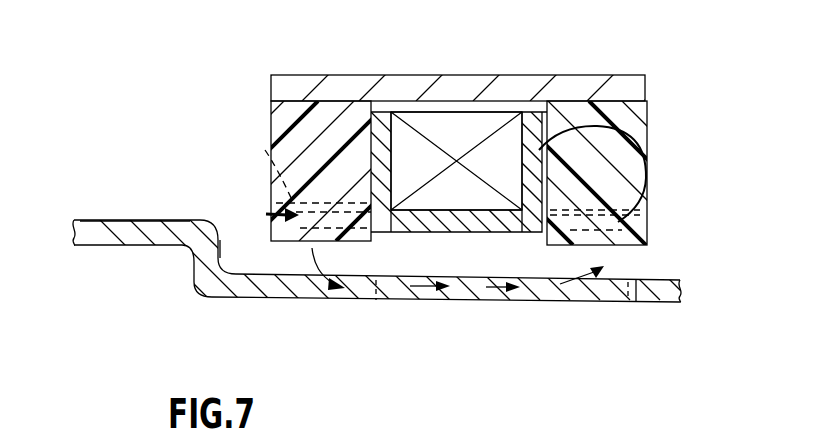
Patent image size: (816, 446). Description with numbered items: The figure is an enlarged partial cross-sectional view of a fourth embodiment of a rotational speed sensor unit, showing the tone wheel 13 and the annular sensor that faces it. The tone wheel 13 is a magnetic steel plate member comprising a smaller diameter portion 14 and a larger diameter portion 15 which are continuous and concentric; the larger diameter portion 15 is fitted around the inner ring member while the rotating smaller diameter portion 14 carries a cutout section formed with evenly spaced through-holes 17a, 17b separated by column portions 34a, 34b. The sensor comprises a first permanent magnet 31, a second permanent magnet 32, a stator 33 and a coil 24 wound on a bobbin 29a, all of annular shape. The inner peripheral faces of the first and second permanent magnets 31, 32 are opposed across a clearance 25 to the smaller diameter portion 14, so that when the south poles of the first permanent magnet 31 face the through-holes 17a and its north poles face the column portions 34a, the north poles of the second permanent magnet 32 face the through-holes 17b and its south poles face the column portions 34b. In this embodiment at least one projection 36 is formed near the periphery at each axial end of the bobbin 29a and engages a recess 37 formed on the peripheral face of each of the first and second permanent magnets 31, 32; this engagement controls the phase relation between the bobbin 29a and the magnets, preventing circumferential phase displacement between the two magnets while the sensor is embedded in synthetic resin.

The tone wheel 13 is at (119, 220).
The smaller diameter portion 14 is at (450, 302).
The larger diameter portion 15 is at (82, 220).
The through-holes 17a is at (375, 302).
The through-holes 17b is at (640, 288).
The coil 24 is at (480, 126).
The clearance 25 is at (620, 258).
The bobbin 29a is at (644, 130).
The first permanent magnet 31 is at (292, 108).
The second permanent magnet 32 is at (621, 120).
The stator 33 is at (413, 84).
The column portions 34a is at (262, 273).
The column portions 34b is at (639, 281).
The projection 36 is at (272, 214).
The recess 37 is at (270, 156).